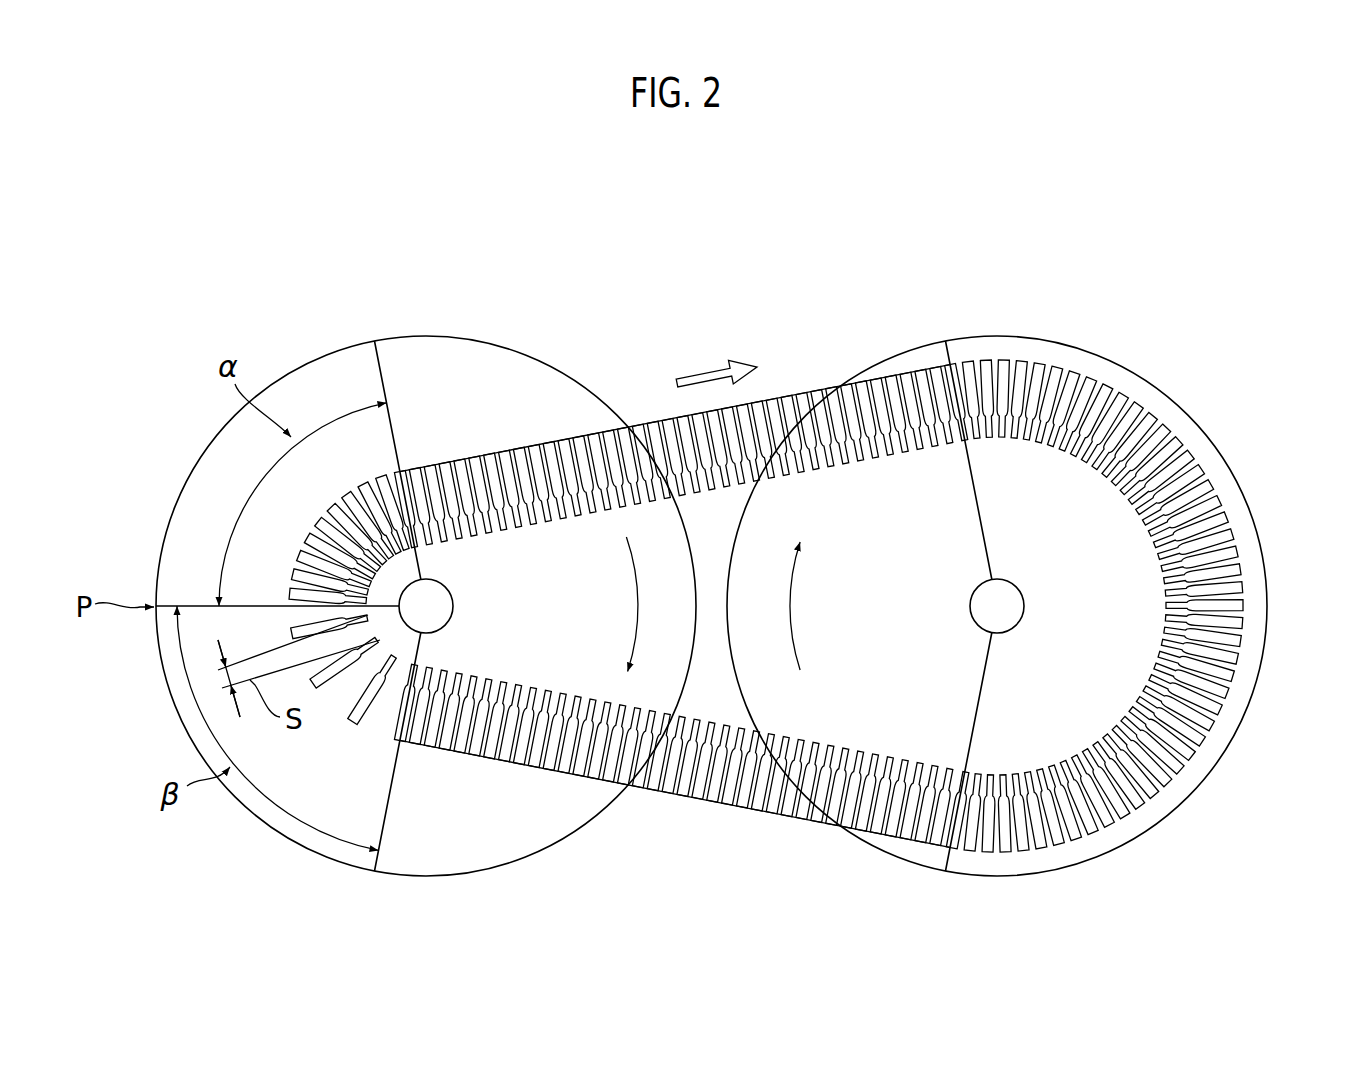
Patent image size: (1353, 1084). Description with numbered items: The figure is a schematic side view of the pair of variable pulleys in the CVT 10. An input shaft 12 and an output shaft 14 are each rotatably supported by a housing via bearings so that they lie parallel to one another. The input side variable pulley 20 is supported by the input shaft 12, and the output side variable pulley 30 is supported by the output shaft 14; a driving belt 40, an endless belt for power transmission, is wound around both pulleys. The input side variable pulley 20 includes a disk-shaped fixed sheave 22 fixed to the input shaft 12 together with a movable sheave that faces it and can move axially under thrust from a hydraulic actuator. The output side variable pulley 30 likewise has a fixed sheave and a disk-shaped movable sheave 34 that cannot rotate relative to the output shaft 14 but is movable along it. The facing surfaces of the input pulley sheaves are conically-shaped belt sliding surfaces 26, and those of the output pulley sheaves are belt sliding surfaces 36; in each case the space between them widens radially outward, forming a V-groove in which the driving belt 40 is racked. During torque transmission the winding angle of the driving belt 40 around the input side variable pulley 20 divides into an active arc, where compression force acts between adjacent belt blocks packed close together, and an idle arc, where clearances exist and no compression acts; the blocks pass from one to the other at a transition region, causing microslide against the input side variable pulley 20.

The CVT 10 is at (1143, 248).
The input shaft 12 is at (453, 607).
The output shaft 14 is at (1010, 598).
The input side variable pulley 20 is at (437, 332).
The fixed sheave 22 is at (495, 870).
The belt sliding surfaces 26 is at (422, 853).
The output side variable pulley 30 is at (1142, 372).
The movable sheave 34 is at (1243, 482).
The belt sliding surfaces 36 is at (1188, 432).
The driving belt 40 is at (787, 392).